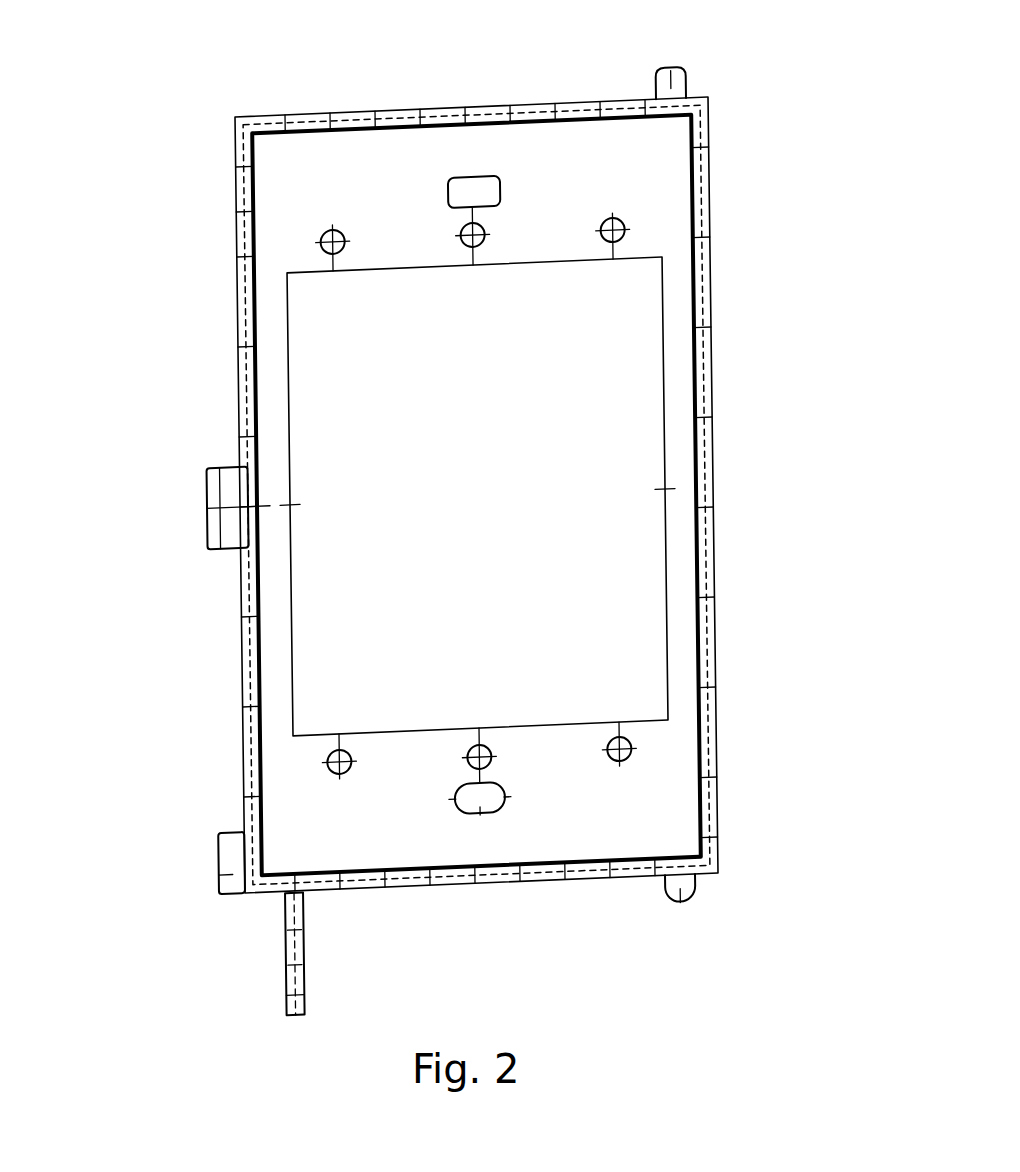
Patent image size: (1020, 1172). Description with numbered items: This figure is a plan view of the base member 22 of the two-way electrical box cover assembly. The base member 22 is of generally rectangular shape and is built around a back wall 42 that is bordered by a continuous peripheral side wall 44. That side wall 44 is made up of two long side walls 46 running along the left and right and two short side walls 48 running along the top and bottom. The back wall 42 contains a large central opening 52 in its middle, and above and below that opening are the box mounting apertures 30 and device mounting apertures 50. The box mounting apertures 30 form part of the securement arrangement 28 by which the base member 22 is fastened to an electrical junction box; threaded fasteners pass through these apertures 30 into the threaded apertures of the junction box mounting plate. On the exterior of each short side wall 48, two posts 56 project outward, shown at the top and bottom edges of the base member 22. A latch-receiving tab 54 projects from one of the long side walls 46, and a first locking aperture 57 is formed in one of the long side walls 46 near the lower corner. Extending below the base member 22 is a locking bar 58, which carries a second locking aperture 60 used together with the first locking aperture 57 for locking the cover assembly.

The base member 22 is at (128, 268).
The securement arrangement 28 is at (660, 220).
The box mounting apertures 30 is at (345, 232).
The back wall 42 is at (586, 172).
The continuous peripheral side wall 44 is at (722, 286).
The long side walls 46 is at (240, 368).
The short side walls 48 is at (410, 112).
The device mounting apertures 50 is at (487, 226).
The central opening 52 is at (590, 548).
The latch-receiving tab 54 is at (207, 497).
The posts 56 is at (680, 65).
The first locking aperture 57 is at (205, 866).
The locking bar 58 is at (305, 930).
The second locking aperture 60 is at (316, 965).